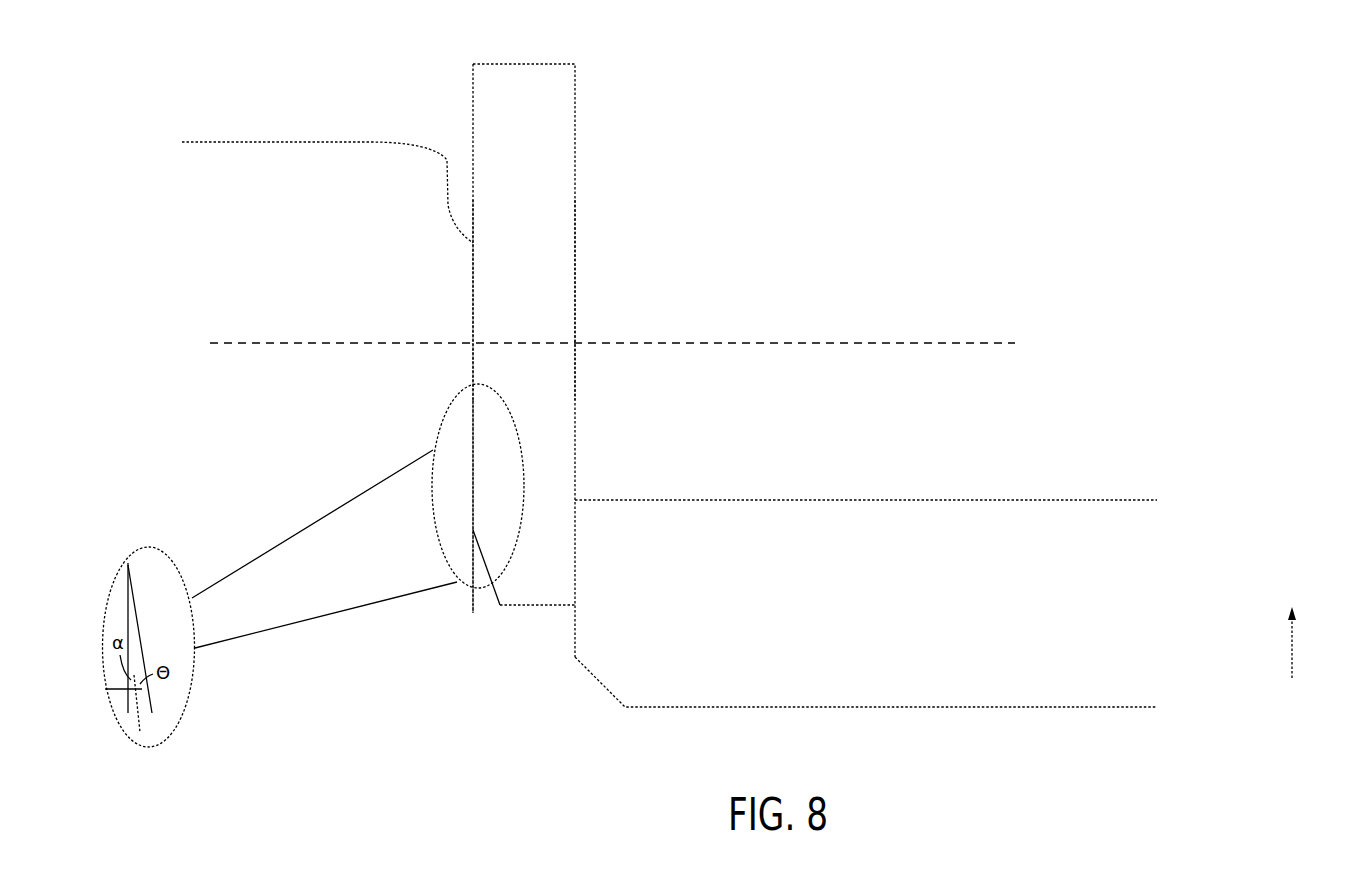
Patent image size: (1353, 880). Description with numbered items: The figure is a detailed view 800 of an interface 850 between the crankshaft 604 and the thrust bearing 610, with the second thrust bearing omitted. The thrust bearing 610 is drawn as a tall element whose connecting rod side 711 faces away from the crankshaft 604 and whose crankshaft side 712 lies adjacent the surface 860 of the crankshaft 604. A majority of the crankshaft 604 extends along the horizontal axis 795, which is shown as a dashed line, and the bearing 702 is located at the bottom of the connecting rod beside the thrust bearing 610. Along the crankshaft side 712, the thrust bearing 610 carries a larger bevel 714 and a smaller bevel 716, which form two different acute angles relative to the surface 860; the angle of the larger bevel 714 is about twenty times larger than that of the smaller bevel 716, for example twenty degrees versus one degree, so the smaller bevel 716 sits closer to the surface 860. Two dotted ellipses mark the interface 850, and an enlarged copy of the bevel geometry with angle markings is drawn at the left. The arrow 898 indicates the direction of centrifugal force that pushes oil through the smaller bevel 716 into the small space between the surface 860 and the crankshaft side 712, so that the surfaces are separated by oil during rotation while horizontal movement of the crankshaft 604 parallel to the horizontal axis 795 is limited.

The crankshaft 604 is at (277, 142).
The thrust bearing 610 is at (658, 96).
The connecting rod side 711 is at (575, 290).
The crankshaft side 712 is at (473, 295).
The detailed view 800 is at (997, 115).
The horizontal axis 795 is at (948, 343).
The bearing 702 is at (948, 500).
The interface 850 is at (507, 410).
The smaller bevel 716 is at (473, 500).
The surface 860 is at (473, 525).
The larger bevel 714 is at (497, 590).
The arrow 898 is at (1293, 650).